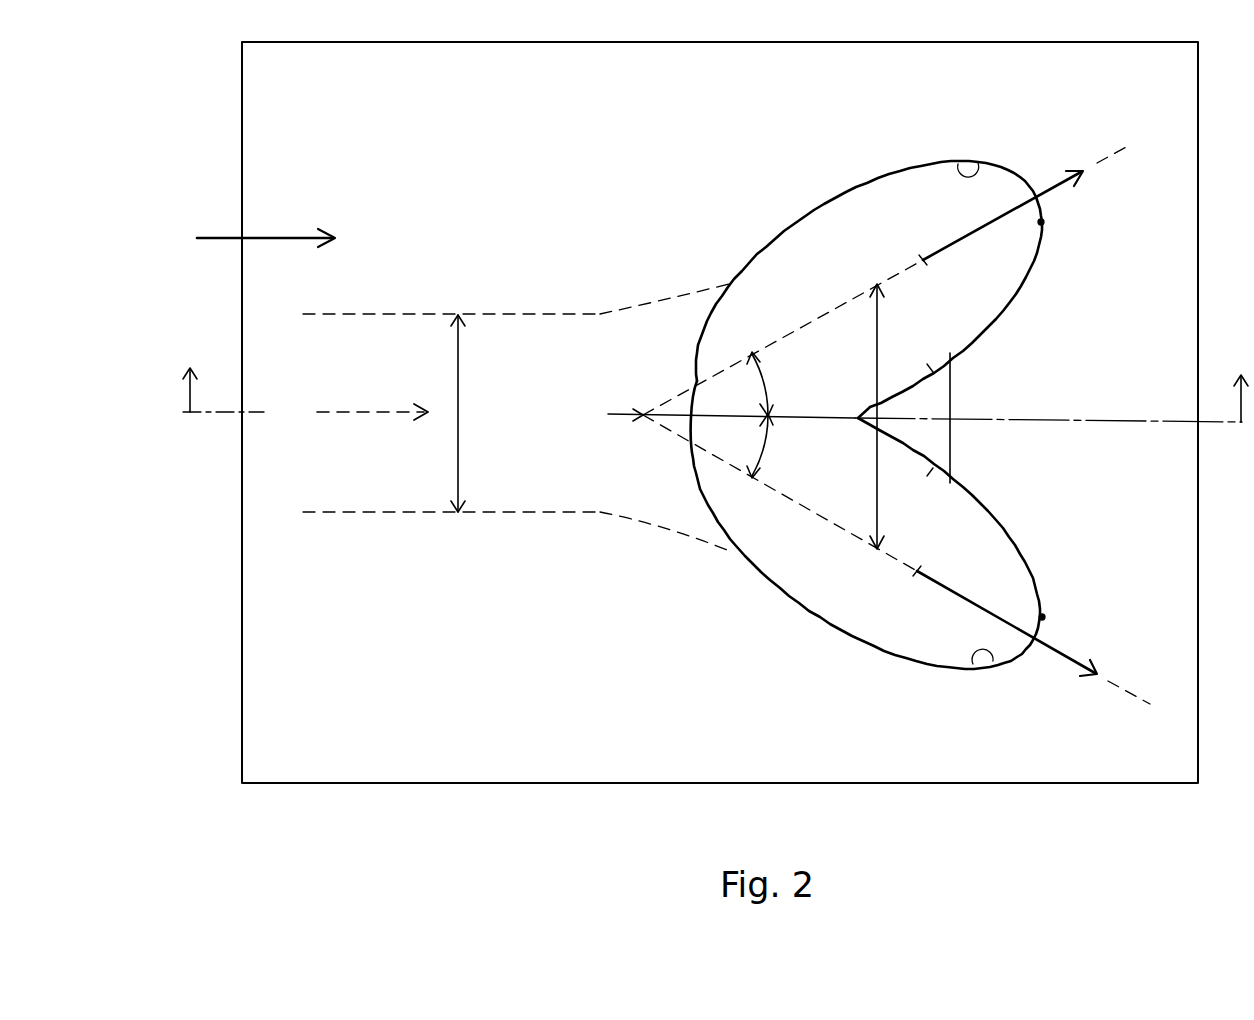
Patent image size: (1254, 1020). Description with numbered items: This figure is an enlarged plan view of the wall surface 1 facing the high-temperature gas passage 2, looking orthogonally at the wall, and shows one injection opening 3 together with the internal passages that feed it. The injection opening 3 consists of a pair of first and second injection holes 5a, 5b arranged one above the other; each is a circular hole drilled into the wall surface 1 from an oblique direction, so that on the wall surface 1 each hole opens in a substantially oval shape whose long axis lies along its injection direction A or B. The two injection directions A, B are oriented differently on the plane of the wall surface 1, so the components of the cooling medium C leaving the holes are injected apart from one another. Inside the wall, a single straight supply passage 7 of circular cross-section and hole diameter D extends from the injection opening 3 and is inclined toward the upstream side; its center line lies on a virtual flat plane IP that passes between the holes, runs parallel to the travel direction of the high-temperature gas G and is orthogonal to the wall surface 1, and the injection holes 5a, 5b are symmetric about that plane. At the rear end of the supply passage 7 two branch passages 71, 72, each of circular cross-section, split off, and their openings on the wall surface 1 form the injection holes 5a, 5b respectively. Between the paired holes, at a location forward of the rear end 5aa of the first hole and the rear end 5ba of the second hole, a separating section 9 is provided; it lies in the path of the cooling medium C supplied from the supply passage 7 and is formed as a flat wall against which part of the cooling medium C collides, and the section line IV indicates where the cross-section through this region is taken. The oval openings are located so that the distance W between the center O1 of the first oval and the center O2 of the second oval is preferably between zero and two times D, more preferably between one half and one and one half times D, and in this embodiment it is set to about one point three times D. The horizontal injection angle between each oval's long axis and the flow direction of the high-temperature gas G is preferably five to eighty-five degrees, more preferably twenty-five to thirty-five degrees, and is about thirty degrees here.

The wall surface 1 is at (265, 78).
The high-temperature gas passage 2 is at (220, 632).
The injection opening 3 is at (768, 283).
The first injection hole 5a is at (966, 160).
The rear end of the injection hole 5a 5aa is at (1046, 222).
The second injection hole 5b is at (983, 672).
The rear end of the injection hole 5b 5ba is at (1046, 617).
The supply passage 7 is at (393, 490).
The first branch passage 71 is at (680, 307).
The second branch passage 72 is at (633, 518).
The separating section 9 is at (940, 443).
The center of the oval shape of the injection hole 5a O1 is at (877, 279).
The center of the oval shape of the injection hole 5b O2 is at (877, 555).
The injection direction A is at (1046, 186).
The injection direction B is at (1063, 656).
The cooling medium C is at (372, 415).
The hole diameter of the supply passage D is at (460, 384).
The high-temperature gas G is at (288, 236).
The distance between the centers O1 and O2 W is at (878, 333).
The virtual flat plane IP is at (1073, 422).
The section line IV- IV is at (715, 378).